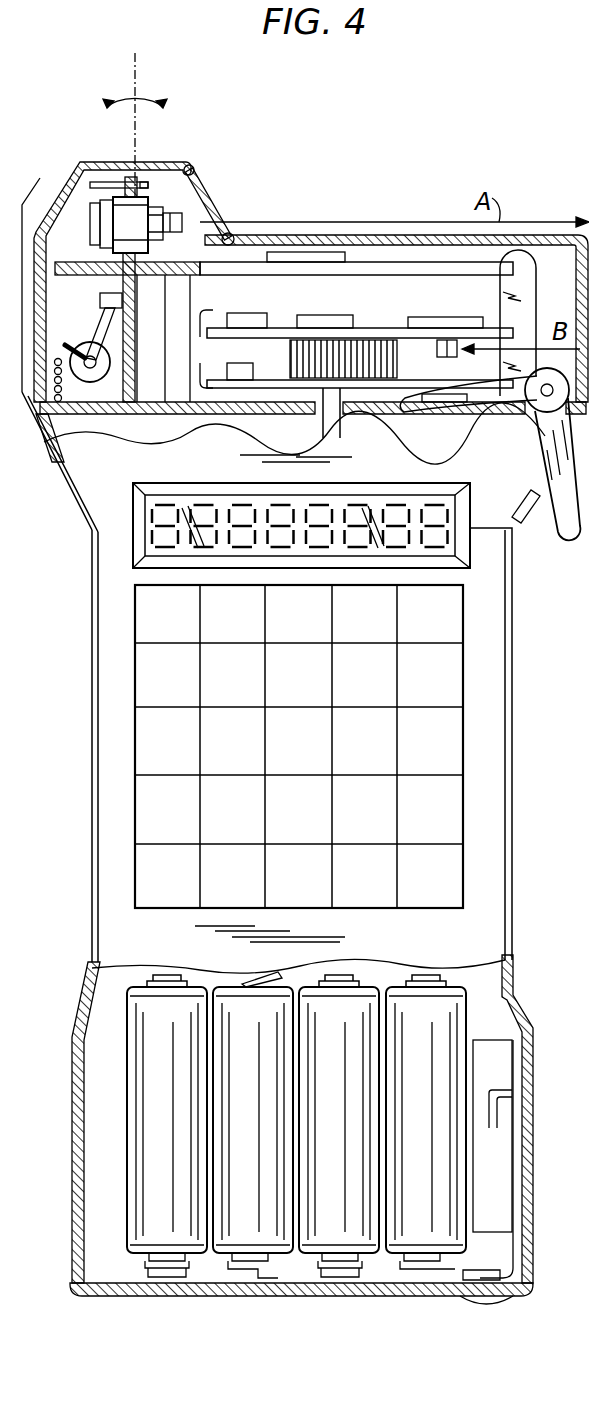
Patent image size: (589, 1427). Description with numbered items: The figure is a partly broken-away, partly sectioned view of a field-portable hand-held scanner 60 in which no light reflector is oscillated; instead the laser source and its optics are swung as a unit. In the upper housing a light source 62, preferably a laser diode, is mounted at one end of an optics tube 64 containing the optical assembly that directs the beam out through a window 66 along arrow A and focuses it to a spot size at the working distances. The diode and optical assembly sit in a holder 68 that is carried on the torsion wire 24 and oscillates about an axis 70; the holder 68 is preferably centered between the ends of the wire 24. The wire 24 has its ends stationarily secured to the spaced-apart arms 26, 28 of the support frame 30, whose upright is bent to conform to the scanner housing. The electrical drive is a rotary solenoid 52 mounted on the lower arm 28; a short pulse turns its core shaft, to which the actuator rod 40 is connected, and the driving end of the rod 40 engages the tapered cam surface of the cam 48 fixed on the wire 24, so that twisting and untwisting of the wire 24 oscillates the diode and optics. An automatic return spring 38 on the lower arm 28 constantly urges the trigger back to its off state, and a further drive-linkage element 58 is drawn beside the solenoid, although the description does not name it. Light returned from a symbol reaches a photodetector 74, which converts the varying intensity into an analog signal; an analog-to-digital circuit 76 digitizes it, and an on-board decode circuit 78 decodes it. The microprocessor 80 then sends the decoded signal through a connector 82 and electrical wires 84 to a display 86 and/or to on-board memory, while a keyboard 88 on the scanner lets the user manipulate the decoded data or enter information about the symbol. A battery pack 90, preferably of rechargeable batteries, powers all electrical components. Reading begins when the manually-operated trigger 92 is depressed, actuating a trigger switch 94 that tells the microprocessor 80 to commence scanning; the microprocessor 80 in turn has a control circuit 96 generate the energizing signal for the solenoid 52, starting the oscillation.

The torsion wire 24 is at (133, 347).
The arm 26 is at (111, 182).
The lower arm 28 is at (106, 414).
The support frame 30 is at (22, 232).
The automatic return spring 38 is at (68, 412).
The actuator rod 40 is at (104, 306).
The cam 48 is at (157, 270).
The rotary solenoid 52 is at (128, 412).
The switch lever 58 is at (75, 347).
The hand-held scanner 60 is at (445, 171).
The light source 62 is at (90, 198).
The optics tube 64 is at (150, 206).
The window 66 is at (166, 211).
The holder 68 is at (205, 190).
The axis 70 is at (137, 70).
The photodetector 74 is at (458, 360).
The analog-to-digital circuit 76 is at (481, 320).
The decode circuit 78 is at (340, 318).
The microprocessor 80 is at (268, 318).
The connector 82 is at (393, 354).
The electrical wires 84 is at (338, 436).
The display 86 is at (150, 534).
The keyboard 88 is at (453, 683).
The battery pack 90 is at (470, 998).
The trigger 92 is at (563, 537).
The trigger switch 94 is at (426, 404).
The control circuit 96 is at (251, 372).